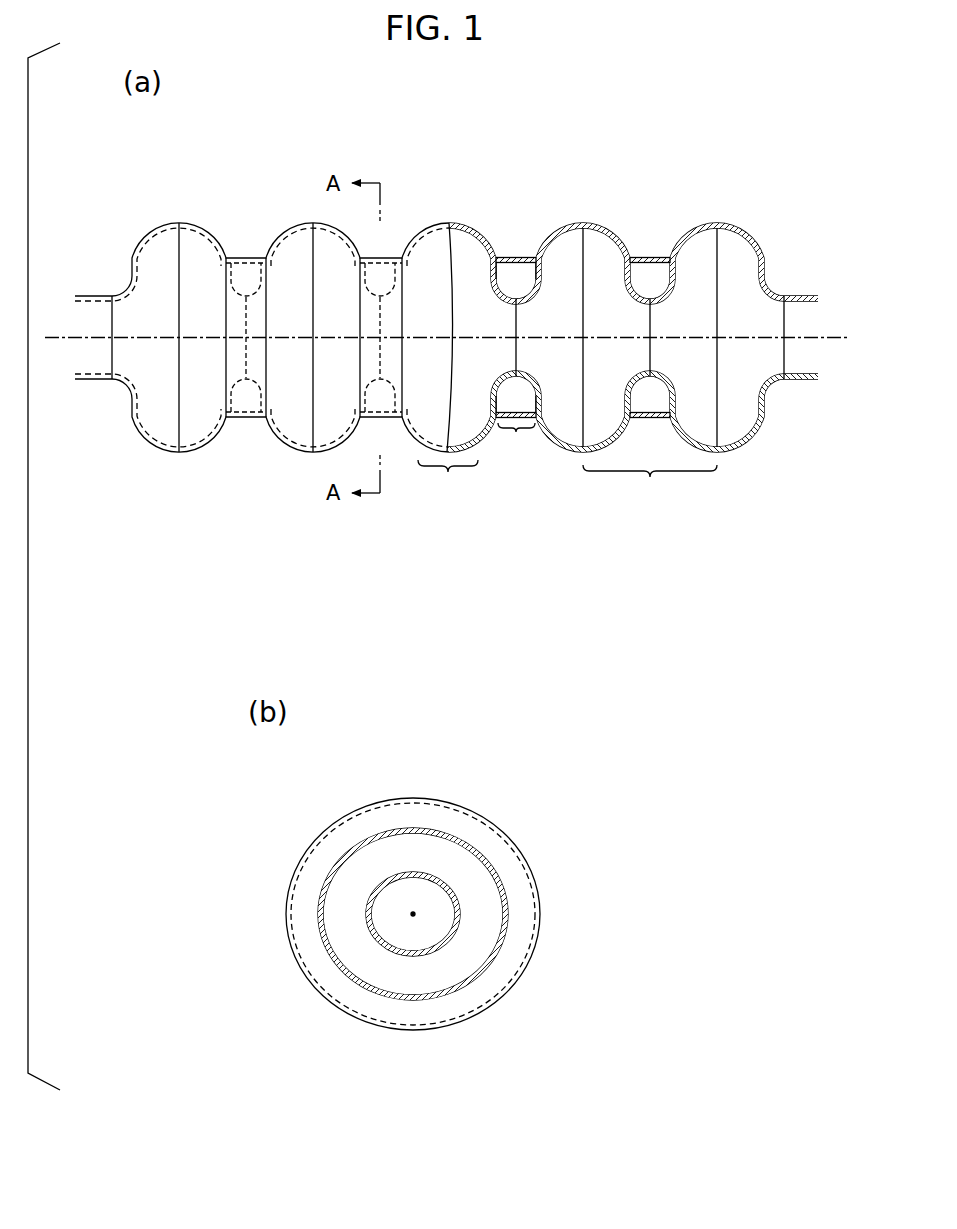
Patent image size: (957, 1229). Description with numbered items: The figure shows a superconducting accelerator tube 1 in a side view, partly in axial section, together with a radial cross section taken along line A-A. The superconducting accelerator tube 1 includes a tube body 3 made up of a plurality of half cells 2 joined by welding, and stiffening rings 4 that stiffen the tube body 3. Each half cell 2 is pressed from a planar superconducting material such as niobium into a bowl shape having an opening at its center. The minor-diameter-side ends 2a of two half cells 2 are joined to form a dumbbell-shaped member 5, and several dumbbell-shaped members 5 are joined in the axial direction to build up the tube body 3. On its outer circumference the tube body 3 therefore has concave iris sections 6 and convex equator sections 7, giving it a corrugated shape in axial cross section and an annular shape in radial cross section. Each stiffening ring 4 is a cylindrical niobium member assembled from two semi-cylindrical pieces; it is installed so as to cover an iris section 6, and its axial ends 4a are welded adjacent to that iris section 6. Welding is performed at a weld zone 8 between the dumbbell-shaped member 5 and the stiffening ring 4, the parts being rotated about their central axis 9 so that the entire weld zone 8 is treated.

The superconducting accelerator tube 1 is at (748, 183).
The half cell 2 is at (138, 223).
The minor-diameter-side end 2a is at (649, 313).
The tube body 3 is at (733, 463).
The stiffening ring 4 is at (235, 420).
The axial end 4a is at (498, 425).
The dumbbell-shaped member 5 is at (650, 485).
The iris section 6 is at (405, 1048).
The equator section 7 is at (575, 982).
The weld zone 8 is at (393, 257).
The central axis 9 is at (833, 337).